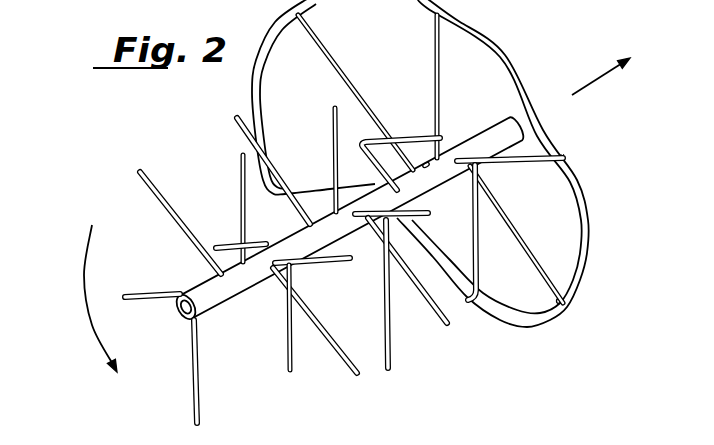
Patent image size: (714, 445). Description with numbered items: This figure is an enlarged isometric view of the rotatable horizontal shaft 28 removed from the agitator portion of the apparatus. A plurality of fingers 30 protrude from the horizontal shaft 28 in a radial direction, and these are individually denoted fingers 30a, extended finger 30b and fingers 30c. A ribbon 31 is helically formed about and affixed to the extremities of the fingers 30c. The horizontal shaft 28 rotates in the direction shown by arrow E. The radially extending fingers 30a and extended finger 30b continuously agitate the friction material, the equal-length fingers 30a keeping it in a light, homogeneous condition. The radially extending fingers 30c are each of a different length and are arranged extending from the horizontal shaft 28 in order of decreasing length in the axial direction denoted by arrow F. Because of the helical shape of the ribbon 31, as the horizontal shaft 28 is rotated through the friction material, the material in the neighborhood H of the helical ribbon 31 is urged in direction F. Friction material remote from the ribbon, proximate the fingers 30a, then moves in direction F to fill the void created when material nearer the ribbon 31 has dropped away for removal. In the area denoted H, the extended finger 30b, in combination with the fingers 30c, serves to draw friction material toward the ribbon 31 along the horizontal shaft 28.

The horizontal shaft 28 is at (202, 290).
The fingers 30 is at (140, 177).
The fingers 30a is at (240, 170).
The extended finger 30b is at (390, 345).
The fingers 30c is at (340, 62).
The ribbon 31 is at (575, 188).
The arrow E is at (88, 272).
The arrow F is at (603, 78).
The neighborhood H is at (479, 444).